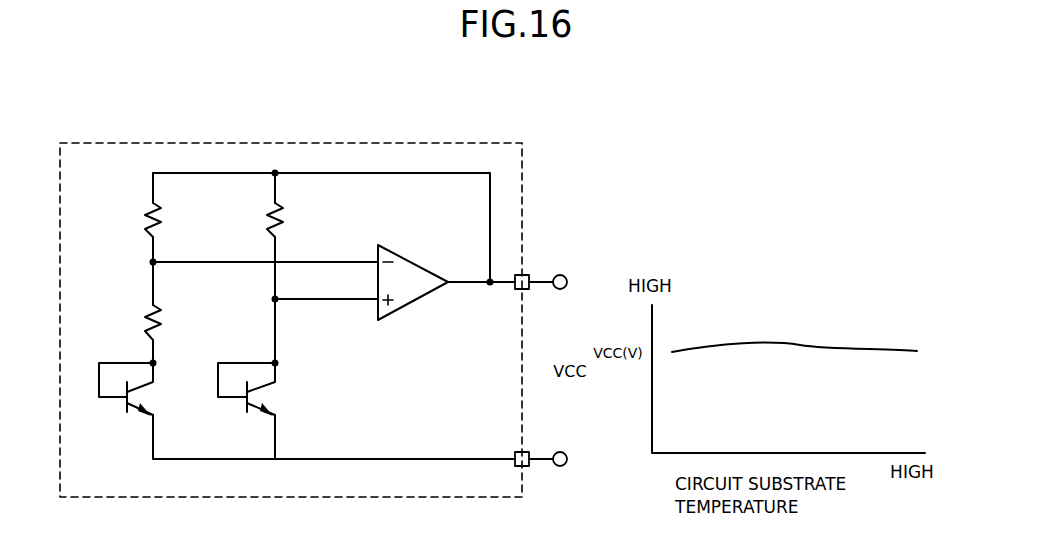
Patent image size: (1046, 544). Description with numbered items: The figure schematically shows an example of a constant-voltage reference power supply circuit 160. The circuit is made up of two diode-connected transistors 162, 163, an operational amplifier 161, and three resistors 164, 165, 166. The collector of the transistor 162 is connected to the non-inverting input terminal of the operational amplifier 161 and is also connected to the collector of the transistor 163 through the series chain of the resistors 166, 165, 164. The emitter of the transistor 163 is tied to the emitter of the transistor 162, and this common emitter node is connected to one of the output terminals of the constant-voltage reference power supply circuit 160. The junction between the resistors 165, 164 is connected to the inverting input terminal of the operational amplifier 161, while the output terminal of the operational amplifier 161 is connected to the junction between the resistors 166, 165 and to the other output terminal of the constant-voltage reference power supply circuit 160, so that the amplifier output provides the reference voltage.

The constant-voltage reference power supply circuit 160 is at (522, 173).
The operational amplifier 161 is at (399, 258).
The transistor 162 is at (246, 408).
The transistor 163 is at (126, 408).
The resistor 164 is at (140, 316).
The resistor 165 is at (166, 207).
The resistor 166 is at (292, 207).